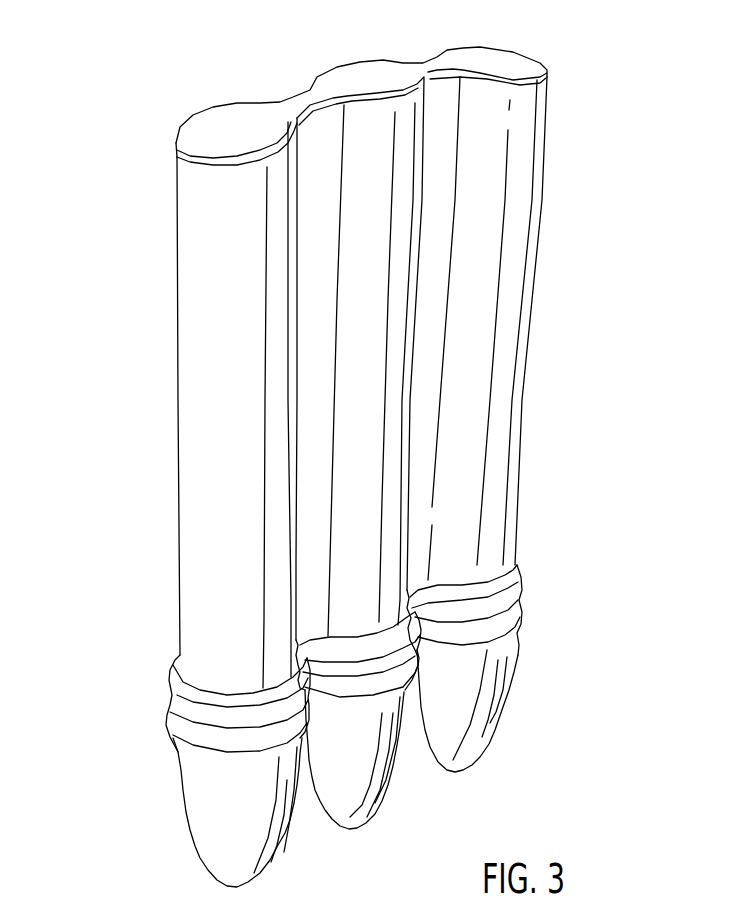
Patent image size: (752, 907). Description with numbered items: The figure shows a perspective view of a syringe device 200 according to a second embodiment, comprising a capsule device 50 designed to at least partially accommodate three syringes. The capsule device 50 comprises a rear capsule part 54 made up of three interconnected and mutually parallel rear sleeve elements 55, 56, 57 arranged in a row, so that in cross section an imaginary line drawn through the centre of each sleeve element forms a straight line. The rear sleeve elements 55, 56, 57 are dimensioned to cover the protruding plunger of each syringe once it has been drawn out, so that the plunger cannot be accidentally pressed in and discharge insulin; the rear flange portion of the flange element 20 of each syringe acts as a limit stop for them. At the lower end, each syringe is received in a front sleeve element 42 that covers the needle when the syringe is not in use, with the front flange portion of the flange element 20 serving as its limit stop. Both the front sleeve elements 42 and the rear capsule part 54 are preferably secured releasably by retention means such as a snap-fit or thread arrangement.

The syringe device 200 is at (349, 460).
The capsule device 50 is at (123, 600).
The rear capsule part 54 is at (527, 415).
The rear sleeve element 55 is at (178, 327).
The rear sleeve element 56 is at (342, 64).
The rear sleeve element 57 is at (534, 318).
The flange element 20 is at (530, 598).
The front sleeve element 42 is at (183, 788).